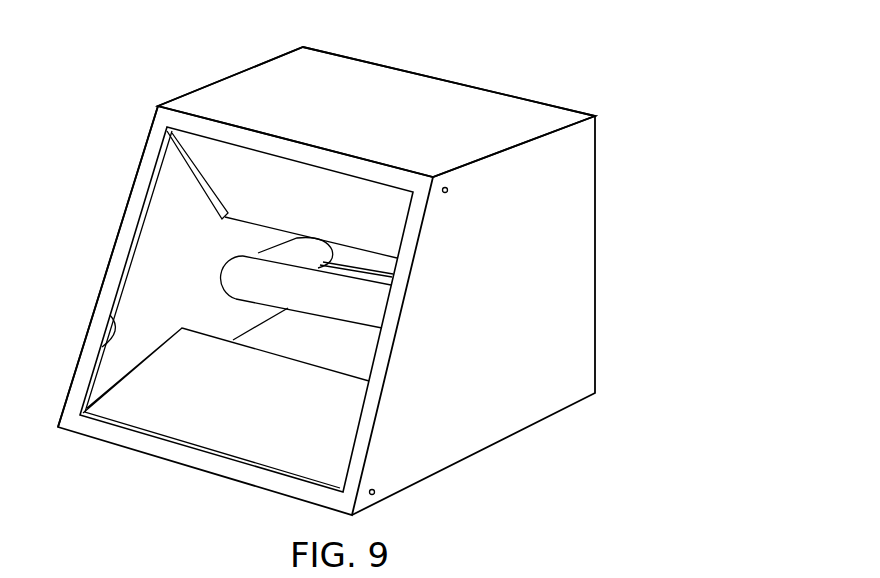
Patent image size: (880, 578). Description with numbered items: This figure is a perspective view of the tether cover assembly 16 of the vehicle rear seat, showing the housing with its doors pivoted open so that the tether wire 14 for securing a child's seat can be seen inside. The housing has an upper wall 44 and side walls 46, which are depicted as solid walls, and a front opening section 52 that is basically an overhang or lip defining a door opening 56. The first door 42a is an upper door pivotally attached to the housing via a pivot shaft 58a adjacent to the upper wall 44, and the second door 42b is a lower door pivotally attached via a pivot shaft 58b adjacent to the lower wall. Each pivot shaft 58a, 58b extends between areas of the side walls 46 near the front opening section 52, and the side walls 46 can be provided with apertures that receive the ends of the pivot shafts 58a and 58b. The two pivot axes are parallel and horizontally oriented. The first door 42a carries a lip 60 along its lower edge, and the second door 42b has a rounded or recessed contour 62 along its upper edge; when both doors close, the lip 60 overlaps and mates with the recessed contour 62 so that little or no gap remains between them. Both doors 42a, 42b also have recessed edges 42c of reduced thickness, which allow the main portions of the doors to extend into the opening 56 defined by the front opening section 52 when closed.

The tether cover assembly 16 is at (494, 42).
The upper wall 44 is at (260, 88).
The side walls 46 is at (552, 263).
The front opening section 52 is at (365, 413).
The first door 42a is at (320, 195).
The second door 42b is at (220, 412).
The recessed edges 42c is at (188, 175).
The tether wire 14 is at (260, 278).
The lip 60 is at (250, 227).
The recessed contour 62 is at (288, 357).
The opening 56 is at (116, 343).
The pivot shaft 58a is at (448, 191).
The pivot shaft 58b is at (376, 493).